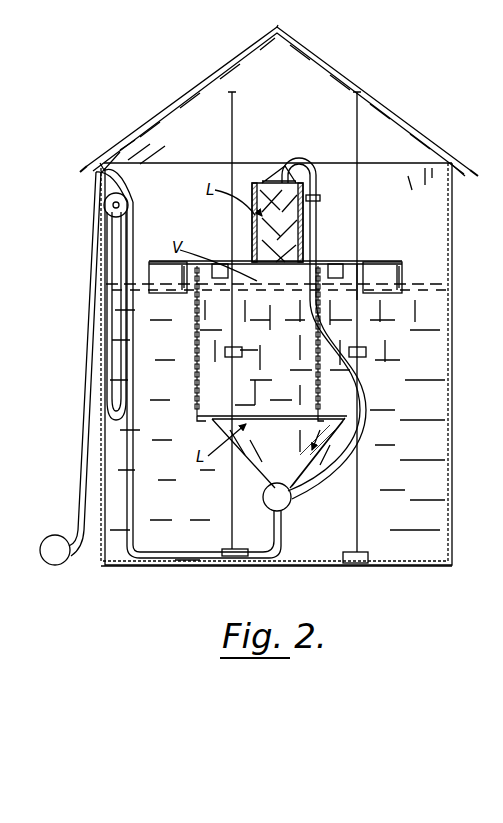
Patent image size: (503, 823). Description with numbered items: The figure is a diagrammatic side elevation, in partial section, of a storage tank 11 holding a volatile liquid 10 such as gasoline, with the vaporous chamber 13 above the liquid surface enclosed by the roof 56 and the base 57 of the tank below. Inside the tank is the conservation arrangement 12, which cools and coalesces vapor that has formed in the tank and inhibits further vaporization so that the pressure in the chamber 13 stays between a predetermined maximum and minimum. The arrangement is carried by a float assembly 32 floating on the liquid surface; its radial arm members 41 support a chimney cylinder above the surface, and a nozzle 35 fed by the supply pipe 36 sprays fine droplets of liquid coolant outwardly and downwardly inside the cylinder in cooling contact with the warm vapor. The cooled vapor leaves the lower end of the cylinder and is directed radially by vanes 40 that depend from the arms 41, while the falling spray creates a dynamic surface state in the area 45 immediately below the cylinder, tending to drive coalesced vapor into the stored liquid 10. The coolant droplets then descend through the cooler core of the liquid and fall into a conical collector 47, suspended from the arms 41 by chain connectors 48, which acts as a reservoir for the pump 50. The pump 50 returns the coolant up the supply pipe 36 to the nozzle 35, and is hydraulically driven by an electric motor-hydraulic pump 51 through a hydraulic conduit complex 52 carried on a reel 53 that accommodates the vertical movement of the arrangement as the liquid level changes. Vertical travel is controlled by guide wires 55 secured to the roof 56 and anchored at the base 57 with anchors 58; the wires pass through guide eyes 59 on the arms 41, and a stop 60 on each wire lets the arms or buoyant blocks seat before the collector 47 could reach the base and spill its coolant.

The volatile liquid 10 is at (449, 294).
The storage tank 11 is at (388, 97).
The conservation arrangement 12 is at (372, 405).
The vaporous chamber 13 is at (416, 186).
The float assembly 32 is at (410, 268).
The nozzle 35 is at (281, 173).
The supply pipe 36 is at (317, 220).
The vanes 40 is at (336, 264).
The radial arm members 41 is at (358, 265).
The dynamic surface area 45 is at (232, 276).
The conical collector 47 is at (257, 470).
The chain connectors 48 is at (195, 389).
The pump 50 is at (289, 509).
The electric motor-hydraulic pump 51 is at (52, 563).
The hydraulic conduit complex 52 is at (131, 533).
The reel 53 is at (128, 200).
The guide wires 55 is at (358, 474).
The roof 56 is at (318, 58).
The base 57 is at (406, 567).
The anchors 58 is at (366, 557).
The guide eyes 59 is at (378, 263).
The stop 60 is at (367, 352).